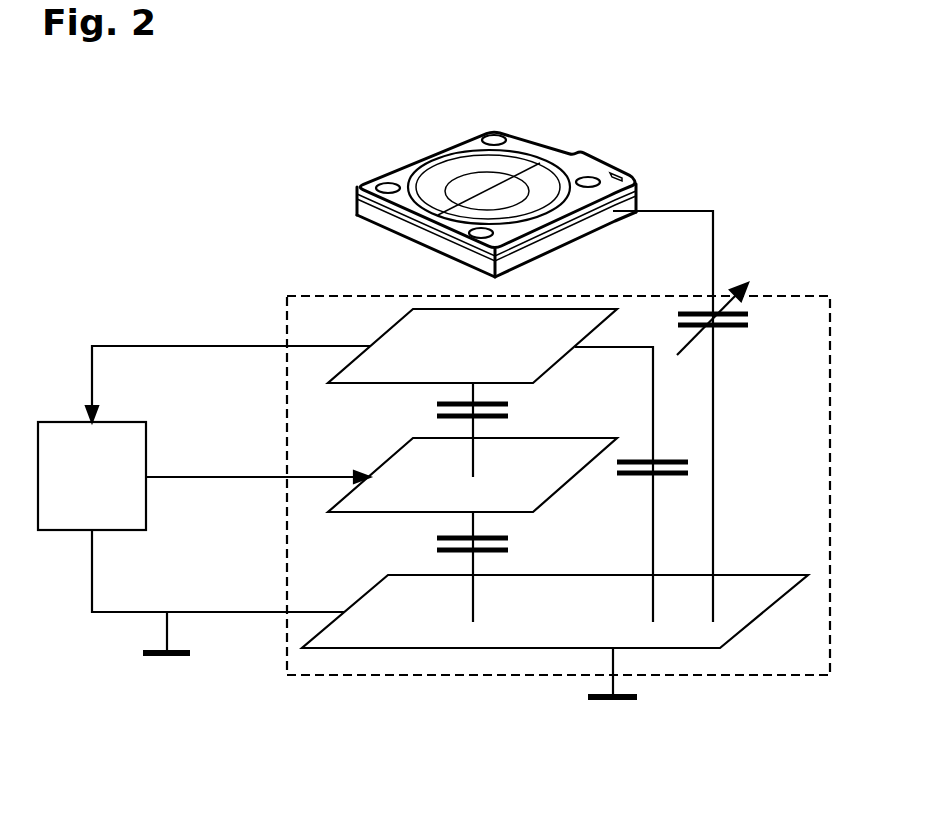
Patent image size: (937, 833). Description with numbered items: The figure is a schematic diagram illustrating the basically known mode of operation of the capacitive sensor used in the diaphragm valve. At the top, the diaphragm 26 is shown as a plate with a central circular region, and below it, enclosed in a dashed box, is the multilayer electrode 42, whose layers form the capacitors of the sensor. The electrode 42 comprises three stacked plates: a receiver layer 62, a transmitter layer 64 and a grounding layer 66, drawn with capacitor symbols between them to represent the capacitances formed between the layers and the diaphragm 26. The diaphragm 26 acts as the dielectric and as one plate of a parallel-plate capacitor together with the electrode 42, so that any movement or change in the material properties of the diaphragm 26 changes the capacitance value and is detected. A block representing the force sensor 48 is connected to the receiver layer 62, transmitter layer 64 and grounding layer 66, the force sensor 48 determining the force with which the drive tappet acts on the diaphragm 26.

The diaphragm 26 is at (450, 175).
The multilayer electrode 42 is at (742, 677).
The force sensor 48 is at (70, 418).
The receiver layer 62 is at (398, 345).
The transmitter layer 64 is at (393, 482).
The grounding layer 66 is at (368, 617).